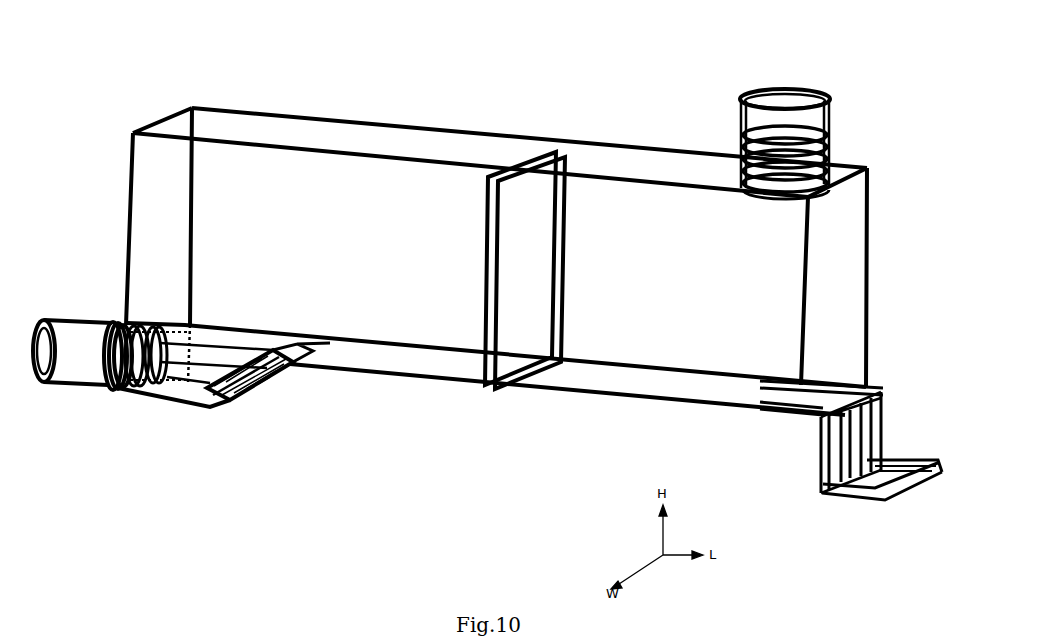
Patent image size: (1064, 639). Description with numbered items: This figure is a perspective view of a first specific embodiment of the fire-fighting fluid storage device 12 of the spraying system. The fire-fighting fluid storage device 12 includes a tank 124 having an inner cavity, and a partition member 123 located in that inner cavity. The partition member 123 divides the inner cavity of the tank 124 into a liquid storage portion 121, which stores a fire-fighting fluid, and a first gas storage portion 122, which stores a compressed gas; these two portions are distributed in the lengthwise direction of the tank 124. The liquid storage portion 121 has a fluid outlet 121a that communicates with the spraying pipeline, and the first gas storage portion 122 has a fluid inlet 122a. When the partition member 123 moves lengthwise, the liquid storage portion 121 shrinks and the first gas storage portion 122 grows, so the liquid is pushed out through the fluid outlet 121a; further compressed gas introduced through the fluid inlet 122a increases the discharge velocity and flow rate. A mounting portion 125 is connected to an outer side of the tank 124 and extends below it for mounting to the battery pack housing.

The fire-fighting fluid storage device 12 is at (136, 61).
The liquid storage portion 121 is at (257, 156).
The fluid outlet 121a is at (80, 368).
The first gas storage portion 122 is at (617, 377).
The fluid inlet 122a is at (781, 98).
The partition member 123 is at (487, 396).
The tank 124 is at (883, 436).
The mounting portion 125 is at (820, 466).